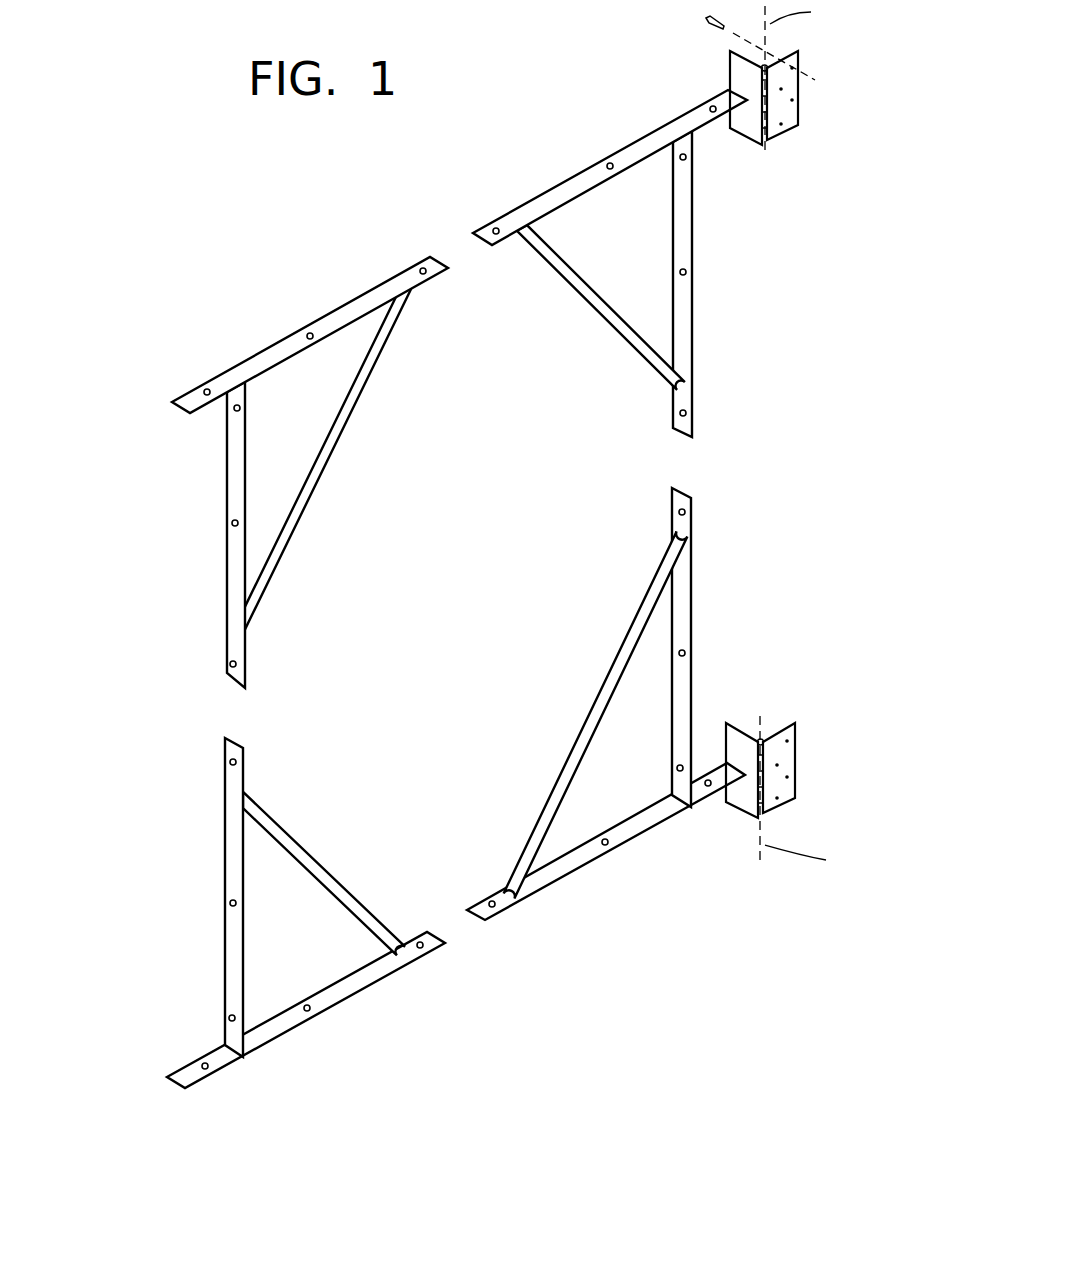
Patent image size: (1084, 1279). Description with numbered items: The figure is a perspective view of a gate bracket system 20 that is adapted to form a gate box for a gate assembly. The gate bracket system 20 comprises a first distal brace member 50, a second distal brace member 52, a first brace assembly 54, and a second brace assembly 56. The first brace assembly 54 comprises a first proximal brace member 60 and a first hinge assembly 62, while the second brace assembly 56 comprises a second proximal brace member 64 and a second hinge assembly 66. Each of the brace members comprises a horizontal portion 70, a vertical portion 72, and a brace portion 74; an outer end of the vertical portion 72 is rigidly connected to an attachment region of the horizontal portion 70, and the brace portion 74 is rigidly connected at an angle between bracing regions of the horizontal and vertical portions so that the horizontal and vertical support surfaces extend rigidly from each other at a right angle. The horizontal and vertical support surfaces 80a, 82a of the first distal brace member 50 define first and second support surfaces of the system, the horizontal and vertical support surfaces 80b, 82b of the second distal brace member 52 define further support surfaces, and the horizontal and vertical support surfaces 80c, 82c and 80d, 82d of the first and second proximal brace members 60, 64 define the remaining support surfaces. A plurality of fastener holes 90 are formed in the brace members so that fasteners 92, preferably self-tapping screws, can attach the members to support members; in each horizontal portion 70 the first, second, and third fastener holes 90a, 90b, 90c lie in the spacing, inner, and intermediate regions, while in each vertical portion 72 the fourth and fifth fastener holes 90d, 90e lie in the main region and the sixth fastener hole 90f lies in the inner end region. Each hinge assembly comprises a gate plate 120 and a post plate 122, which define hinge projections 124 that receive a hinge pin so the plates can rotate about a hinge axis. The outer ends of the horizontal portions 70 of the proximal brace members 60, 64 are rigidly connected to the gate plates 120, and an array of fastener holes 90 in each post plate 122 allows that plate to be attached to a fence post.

The gate bracket system 20 is at (272, 242).
The first distal brace member 50 is at (200, 484).
The second distal brace member 52 is at (196, 944).
The first brace assembly 54 is at (745, 255).
The second brace assembly 56 is at (745, 548).
The first proximal brace member 60 is at (603, 141).
The first hinge assembly 62 is at (815, 62).
The second proximal brace member 64 is at (598, 880).
The second hinge assembly 66 is at (815, 740).
The horizontal portion 70 is at (338, 311).
The vertical portion 72 is at (232, 577).
The brace portion 74 is at (322, 470).
The horizontal support surface of first distal brace member 80a is at (250, 364).
The horizontal support surface of second distal brace member 80b is at (283, 1036).
The horizontal support surface of first proximal brace member 80c is at (657, 132).
The horizontal support surface of second proximal brace member 80d is at (648, 833).
The vertical support surface of first distal brace member 82a is at (228, 450).
The vertical support surface of second distal brace member 82b is at (228, 810).
The vertical support surface of first proximal brace member 82c is at (695, 348).
The vertical support surface of second proximal brace member 82d is at (693, 585).
The fastener holes 90 is at (792, 100).
The first fastener hole 90a is at (206, 391).
The second fastener hole 90b is at (309, 335).
The third fastener hole 90c is at (466, 968).
The fourth fastener hole 90d is at (240, 407).
The fifth fastener hole 90e is at (234, 524).
The sixth fastener hole 90f is at (232, 664).
The fastener 92 is at (700, 22).
The gate plate 120 is at (735, 128).
The post plate 122 is at (791, 124).
The hinge projections 124 is at (785, 132).